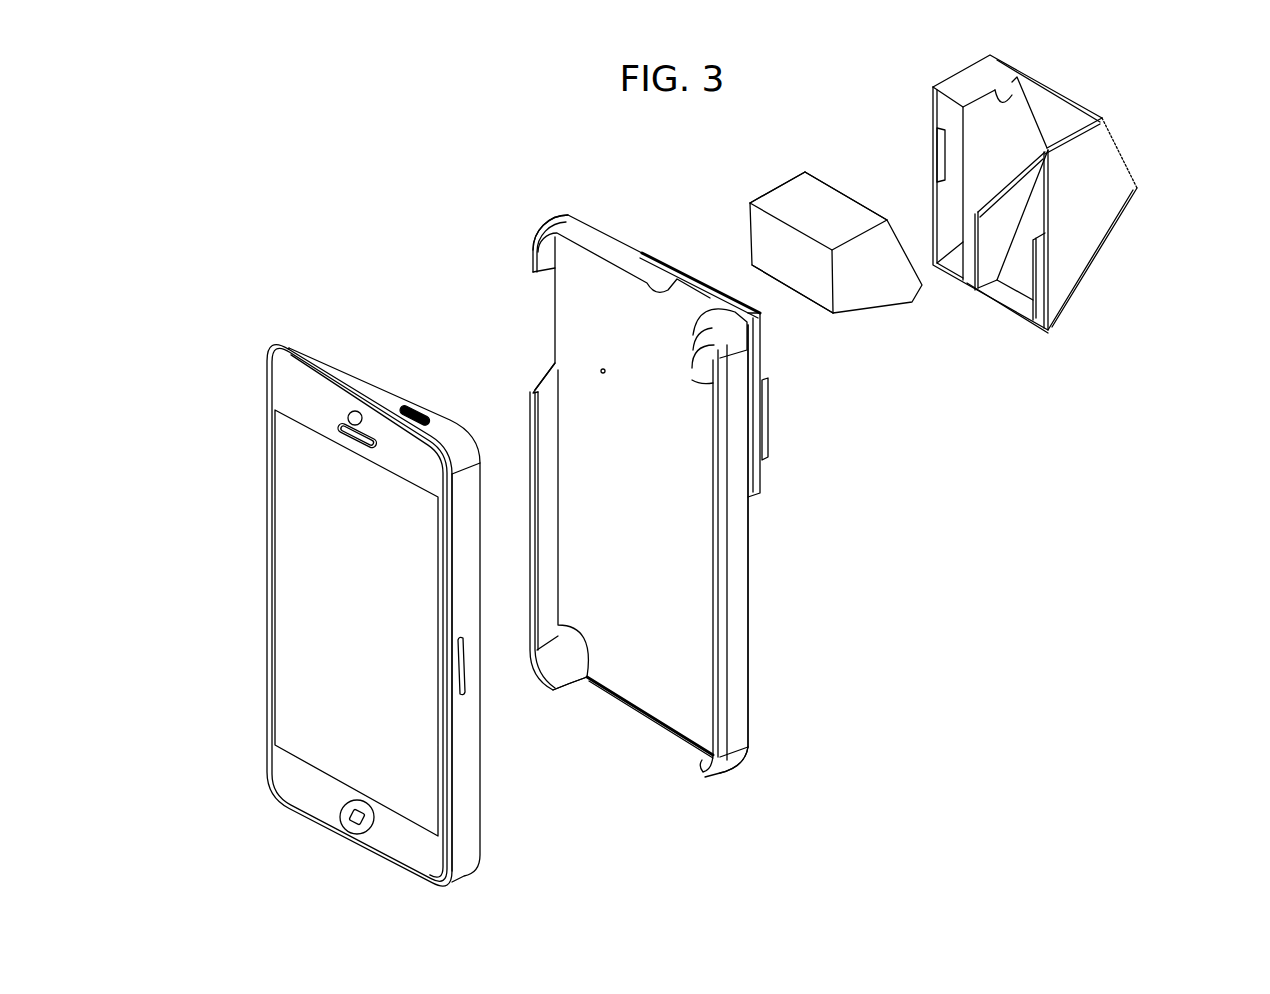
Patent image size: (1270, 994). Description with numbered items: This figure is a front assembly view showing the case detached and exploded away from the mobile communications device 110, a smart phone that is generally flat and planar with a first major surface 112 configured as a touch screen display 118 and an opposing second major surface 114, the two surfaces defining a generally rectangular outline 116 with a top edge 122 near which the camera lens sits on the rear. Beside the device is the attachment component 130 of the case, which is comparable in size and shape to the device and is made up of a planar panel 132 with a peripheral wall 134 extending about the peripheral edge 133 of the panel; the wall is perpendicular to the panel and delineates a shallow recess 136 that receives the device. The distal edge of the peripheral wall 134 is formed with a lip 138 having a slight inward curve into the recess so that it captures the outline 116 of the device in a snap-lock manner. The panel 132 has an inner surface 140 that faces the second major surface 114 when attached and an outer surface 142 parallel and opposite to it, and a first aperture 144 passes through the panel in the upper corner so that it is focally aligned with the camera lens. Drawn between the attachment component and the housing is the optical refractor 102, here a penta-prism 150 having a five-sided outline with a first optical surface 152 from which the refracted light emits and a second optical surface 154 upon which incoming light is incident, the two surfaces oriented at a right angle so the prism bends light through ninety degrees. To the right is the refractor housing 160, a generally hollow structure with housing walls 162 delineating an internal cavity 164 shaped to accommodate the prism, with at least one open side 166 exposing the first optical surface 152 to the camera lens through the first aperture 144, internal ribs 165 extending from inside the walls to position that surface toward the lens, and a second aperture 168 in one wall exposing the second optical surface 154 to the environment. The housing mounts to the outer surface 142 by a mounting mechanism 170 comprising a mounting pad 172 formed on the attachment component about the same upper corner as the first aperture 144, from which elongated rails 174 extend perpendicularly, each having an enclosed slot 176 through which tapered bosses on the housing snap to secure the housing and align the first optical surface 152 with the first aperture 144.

The optical refractor 102 is at (740, 190).
The mobile communications device 110 is at (240, 574).
The first major surface 112 is at (300, 782).
The second major surface 114 is at (480, 725).
The rectangular outline 116 is at (457, 447).
The touch screen display 118 is at (307, 670).
The top edge 122 is at (334, 375).
The attachment component 130 is at (540, 206).
The planar panel 132 is at (627, 710).
The peripheral edge 133 is at (586, 683).
The peripheral wall 134 is at (548, 425).
The shallow recess 136 is at (673, 700).
The lip 138 is at (533, 265).
The inner surface 140 is at (583, 393).
The outer surface 142 is at (755, 652).
The first aperture 144 is at (692, 381).
The penta-prism 150 is at (855, 288).
The first optical surface 152 is at (822, 270).
The second optical surface 154 is at (823, 195).
The refractor housing 160 is at (1140, 183).
The housing walls 162 is at (1080, 242).
The internal cavity 164 is at (1050, 120).
The internal ribs 165 is at (977, 235).
The open side 166 is at (1016, 262).
The second aperture 168 is at (1000, 98).
The mounting mechanism 170 is at (770, 485).
The mounting pad 172 is at (725, 300).
The elongated rails 174 is at (768, 423).
The enclosed slot 176 is at (937, 150).